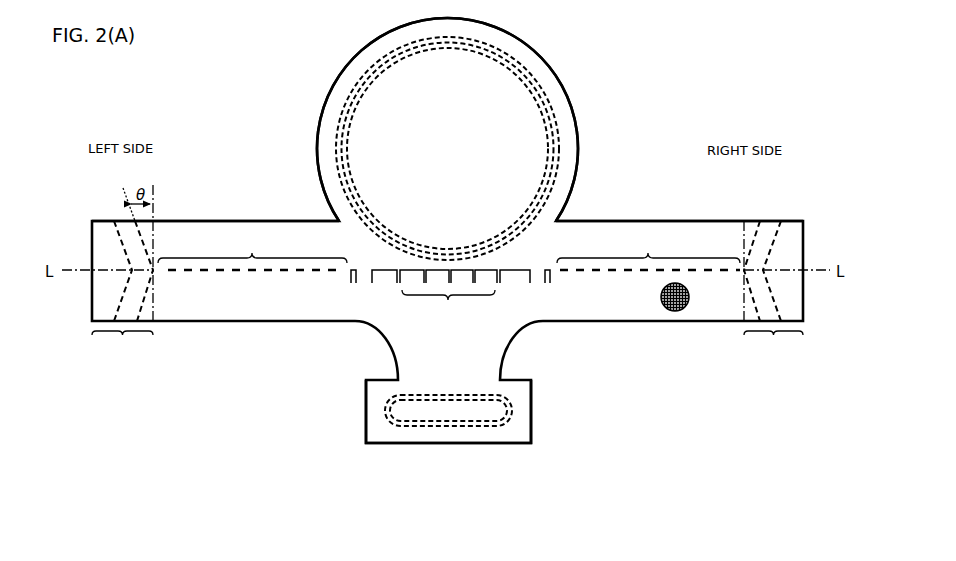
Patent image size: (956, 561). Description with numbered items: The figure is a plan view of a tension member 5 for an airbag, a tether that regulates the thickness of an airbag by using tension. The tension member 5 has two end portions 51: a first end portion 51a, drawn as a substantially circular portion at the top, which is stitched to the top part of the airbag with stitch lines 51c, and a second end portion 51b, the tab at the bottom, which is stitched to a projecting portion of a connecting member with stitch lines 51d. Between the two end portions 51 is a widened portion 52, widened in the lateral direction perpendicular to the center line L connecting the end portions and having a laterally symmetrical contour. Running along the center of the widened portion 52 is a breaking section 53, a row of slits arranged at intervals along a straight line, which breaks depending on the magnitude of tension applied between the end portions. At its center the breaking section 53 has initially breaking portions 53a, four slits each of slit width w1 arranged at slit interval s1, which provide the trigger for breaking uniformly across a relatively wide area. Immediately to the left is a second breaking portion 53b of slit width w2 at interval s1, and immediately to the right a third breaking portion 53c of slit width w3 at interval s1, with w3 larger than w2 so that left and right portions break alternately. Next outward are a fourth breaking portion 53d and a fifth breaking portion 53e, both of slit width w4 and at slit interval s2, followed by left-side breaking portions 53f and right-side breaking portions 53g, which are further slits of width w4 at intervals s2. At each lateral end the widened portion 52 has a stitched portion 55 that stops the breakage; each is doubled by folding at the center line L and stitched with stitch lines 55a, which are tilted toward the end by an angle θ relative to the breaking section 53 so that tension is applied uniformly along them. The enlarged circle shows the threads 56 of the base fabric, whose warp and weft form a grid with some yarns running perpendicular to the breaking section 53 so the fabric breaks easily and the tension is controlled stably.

The tension member for an airbag 5 is at (447, 230).
The end portions 51 is at (285, 80).
The first end portion 51a is at (569, 99).
The second end portion 51b is at (532, 410).
The stitch lines 51c is at (345, 128).
The stitch lines 51d is at (447, 395).
The widened portion 52 is at (253, 221).
The breaking section 53 is at (296, 280).
The initially breaking portions 53a is at (448, 304).
The second breaking portion 53b is at (392, 292).
The third breaking portion 53c is at (508, 292).
The fourth breaking portion 53d is at (368, 294).
The fifth breaking portion 53e is at (538, 294).
The left-side breaking portions 53f is at (252, 251).
The right-side breaking portions 53g is at (648, 251).
The stitched portions 55 is at (447, 270).
The stitch lines 55a is at (122, 243).
The threads 56 is at (667, 313).
The slit width w1 is at (448, 279).
The slit width w2 is at (384, 279).
The slit width w3 is at (515, 279).
The slit width w4 is at (452, 286).
The slit interval s1 is at (447, 268).
The slit interval s2 is at (452, 263).